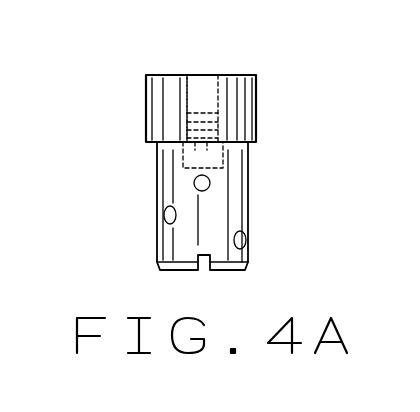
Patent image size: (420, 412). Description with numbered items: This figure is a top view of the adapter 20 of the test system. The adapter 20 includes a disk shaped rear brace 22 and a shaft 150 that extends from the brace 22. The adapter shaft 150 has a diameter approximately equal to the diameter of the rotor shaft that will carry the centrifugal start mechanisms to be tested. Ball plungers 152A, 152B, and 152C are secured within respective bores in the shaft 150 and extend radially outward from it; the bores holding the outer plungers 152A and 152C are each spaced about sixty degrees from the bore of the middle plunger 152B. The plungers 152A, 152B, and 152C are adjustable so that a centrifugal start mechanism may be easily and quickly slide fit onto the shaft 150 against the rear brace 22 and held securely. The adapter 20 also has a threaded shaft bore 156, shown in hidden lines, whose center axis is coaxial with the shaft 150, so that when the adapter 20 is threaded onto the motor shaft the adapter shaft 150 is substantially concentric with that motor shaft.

The adapter 20 is at (108, 192).
The rear brace 22 is at (247, 105).
The threaded shaft bore 156 is at (216, 98).
The shaft 150 is at (233, 205).
The ball plunger 152A is at (164, 218).
The ball plunger 152B is at (209, 180).
The ball plunger 152C is at (246, 240).